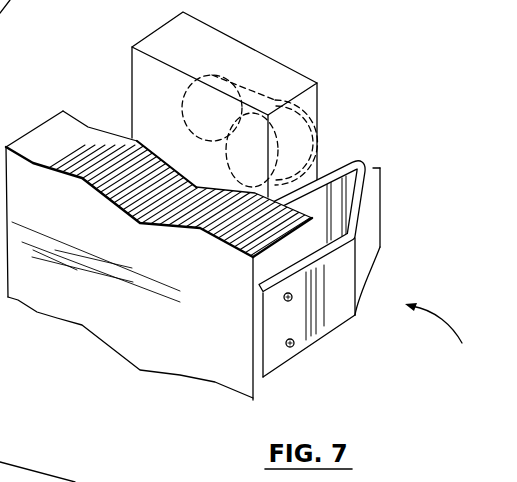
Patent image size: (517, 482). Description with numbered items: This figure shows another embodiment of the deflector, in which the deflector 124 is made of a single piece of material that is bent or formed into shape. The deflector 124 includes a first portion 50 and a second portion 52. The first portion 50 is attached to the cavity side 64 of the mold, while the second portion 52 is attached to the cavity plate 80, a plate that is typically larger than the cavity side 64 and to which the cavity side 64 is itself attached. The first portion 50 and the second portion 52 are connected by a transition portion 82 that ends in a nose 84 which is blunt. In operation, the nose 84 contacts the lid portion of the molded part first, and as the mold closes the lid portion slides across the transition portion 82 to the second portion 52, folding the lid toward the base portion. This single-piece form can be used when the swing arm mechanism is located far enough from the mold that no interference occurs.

The first portion 50 is at (330, 172).
The second portion 52 is at (330, 328).
The cavity side 64 is at (270, 54).
The cavity plate 80 is at (57, 318).
The transition portion 82 is at (367, 253).
The nose 84 is at (377, 161).
The deflector 124 is at (444, 336).